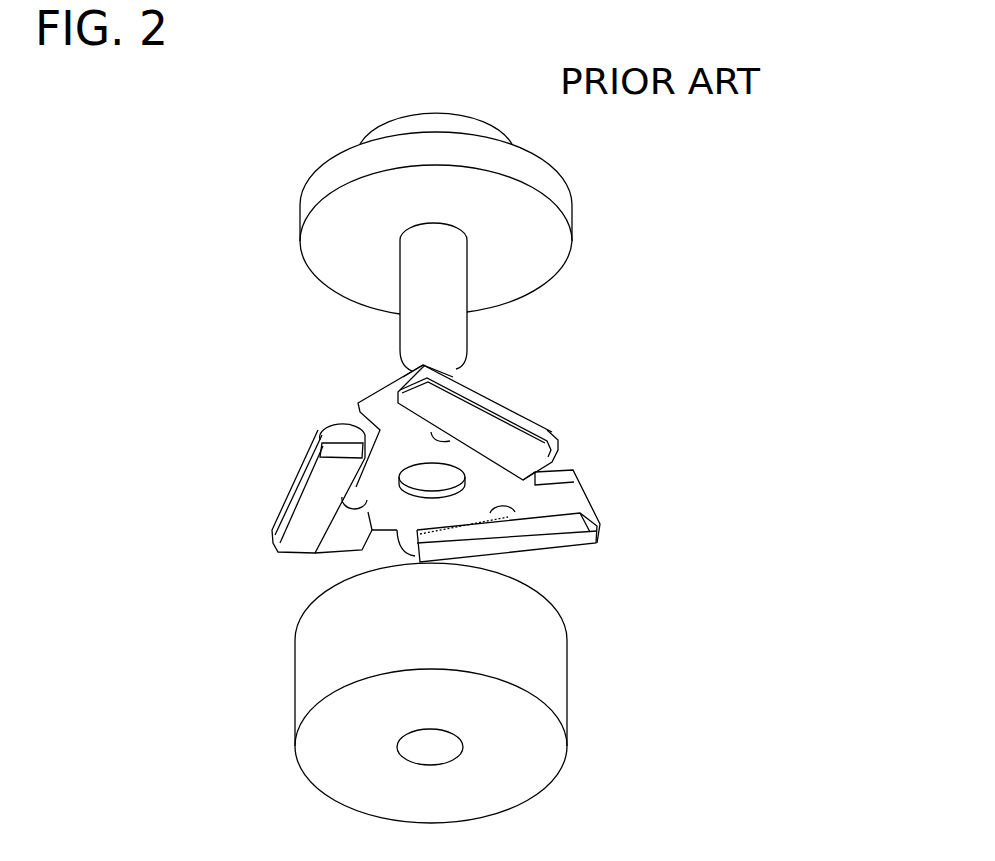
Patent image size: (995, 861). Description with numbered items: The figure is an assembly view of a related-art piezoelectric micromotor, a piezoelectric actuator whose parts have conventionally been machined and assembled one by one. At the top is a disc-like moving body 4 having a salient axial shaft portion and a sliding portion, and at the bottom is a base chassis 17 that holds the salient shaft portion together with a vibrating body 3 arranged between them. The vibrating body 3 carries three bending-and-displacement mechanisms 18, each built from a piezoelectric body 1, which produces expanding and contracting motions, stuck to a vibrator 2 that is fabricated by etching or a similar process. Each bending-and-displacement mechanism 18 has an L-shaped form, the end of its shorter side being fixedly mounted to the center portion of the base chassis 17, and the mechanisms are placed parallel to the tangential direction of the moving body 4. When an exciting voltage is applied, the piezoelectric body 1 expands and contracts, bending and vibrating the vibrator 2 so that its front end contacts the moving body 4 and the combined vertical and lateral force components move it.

The piezoelectric body 1 is at (317, 504).
The vibrator 2 is at (400, 452).
The vibrating body 3 is at (490, 487).
The moving body 4 is at (538, 260).
The base chassis 17 is at (538, 755).
The bending-and-displacement mechanism 18 is at (740, 492).